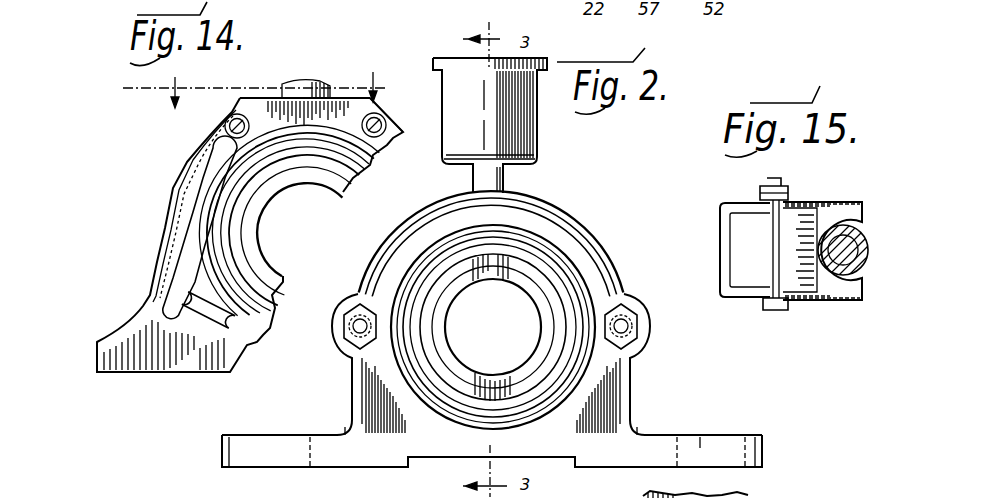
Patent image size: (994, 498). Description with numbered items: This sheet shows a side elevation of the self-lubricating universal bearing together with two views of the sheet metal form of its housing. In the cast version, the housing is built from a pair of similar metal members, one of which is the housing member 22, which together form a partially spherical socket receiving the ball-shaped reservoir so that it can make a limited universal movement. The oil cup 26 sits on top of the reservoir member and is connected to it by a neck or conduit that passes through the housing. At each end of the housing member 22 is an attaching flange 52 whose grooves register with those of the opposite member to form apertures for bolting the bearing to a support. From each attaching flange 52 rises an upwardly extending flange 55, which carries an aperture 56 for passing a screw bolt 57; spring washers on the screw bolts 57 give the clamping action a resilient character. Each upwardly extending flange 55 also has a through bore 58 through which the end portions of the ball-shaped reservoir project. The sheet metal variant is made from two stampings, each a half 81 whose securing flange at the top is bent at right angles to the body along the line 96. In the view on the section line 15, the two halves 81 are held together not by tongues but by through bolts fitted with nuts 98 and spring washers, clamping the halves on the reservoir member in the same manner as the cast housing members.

In FIG. 14, the section line 15 is at (122, 99).
In FIG. 2, the housing member 22 is at (577, 215).
In FIG. 2, the oil cup 26 is at (750, 494).
In FIG. 2, the attaching flange 52 is at (699, 448).
In FIG. 2, the upwardly extending flange 55 is at (565, 375).
In FIG. 2, the aperture 56 is at (340, 348).
In FIG. 2, the screw bolt 57 is at (598, 327).
In FIG. 2, the through bore 58 is at (406, 378).
In FIG. 14, the sheet metal stamping 81 is at (389, 140).
In FIG. 15, the sheet metal stamping 81 is at (720, 203).
In FIG. 14, the bend line 96 is at (226, 121).
In FIG. 15, the bend line 96 is at (770, 250).
In FIG. 15, the nut 98 is at (758, 189).